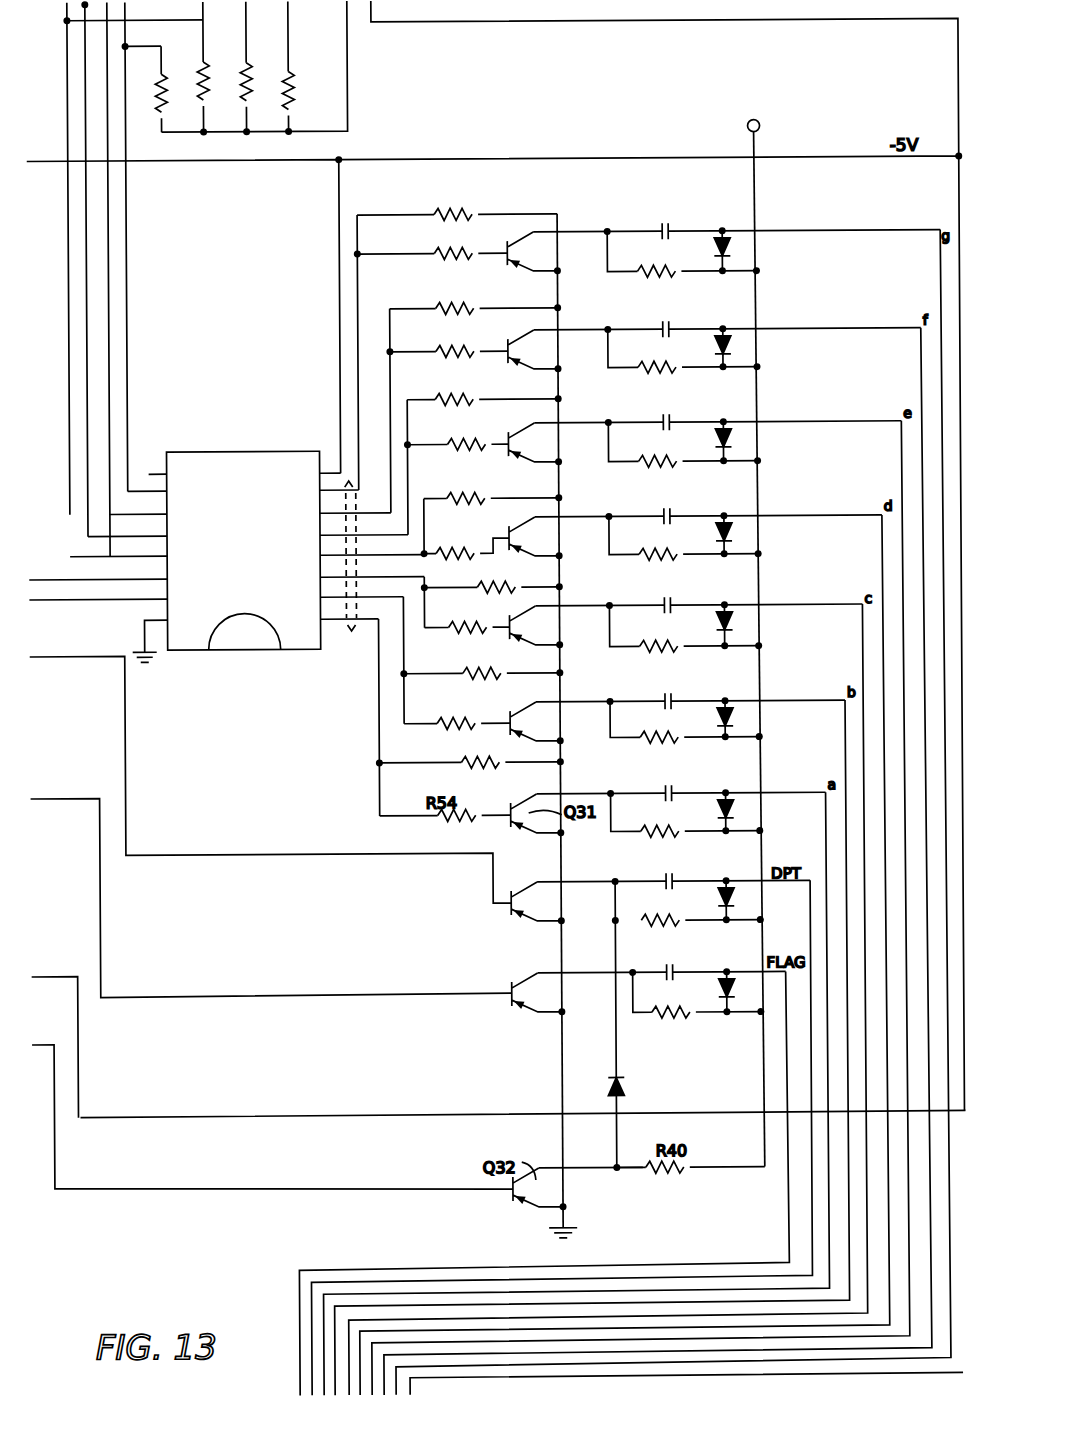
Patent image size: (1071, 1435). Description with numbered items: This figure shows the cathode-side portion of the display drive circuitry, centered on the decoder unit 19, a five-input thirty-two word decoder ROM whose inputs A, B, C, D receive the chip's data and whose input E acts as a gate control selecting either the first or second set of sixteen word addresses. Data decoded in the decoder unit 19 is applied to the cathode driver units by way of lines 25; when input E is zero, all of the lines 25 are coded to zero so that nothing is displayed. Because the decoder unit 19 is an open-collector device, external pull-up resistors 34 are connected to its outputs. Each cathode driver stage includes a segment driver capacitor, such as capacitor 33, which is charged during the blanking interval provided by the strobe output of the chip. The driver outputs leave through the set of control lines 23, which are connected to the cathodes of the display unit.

The Z4 decoder unit 19 is at (254, 451).
The control lines 23 is at (700, 1380).
The output lines 25 is at (349, 571).
The capacitor 33 is at (670, 224).
The resistors 34 is at (474, 190).